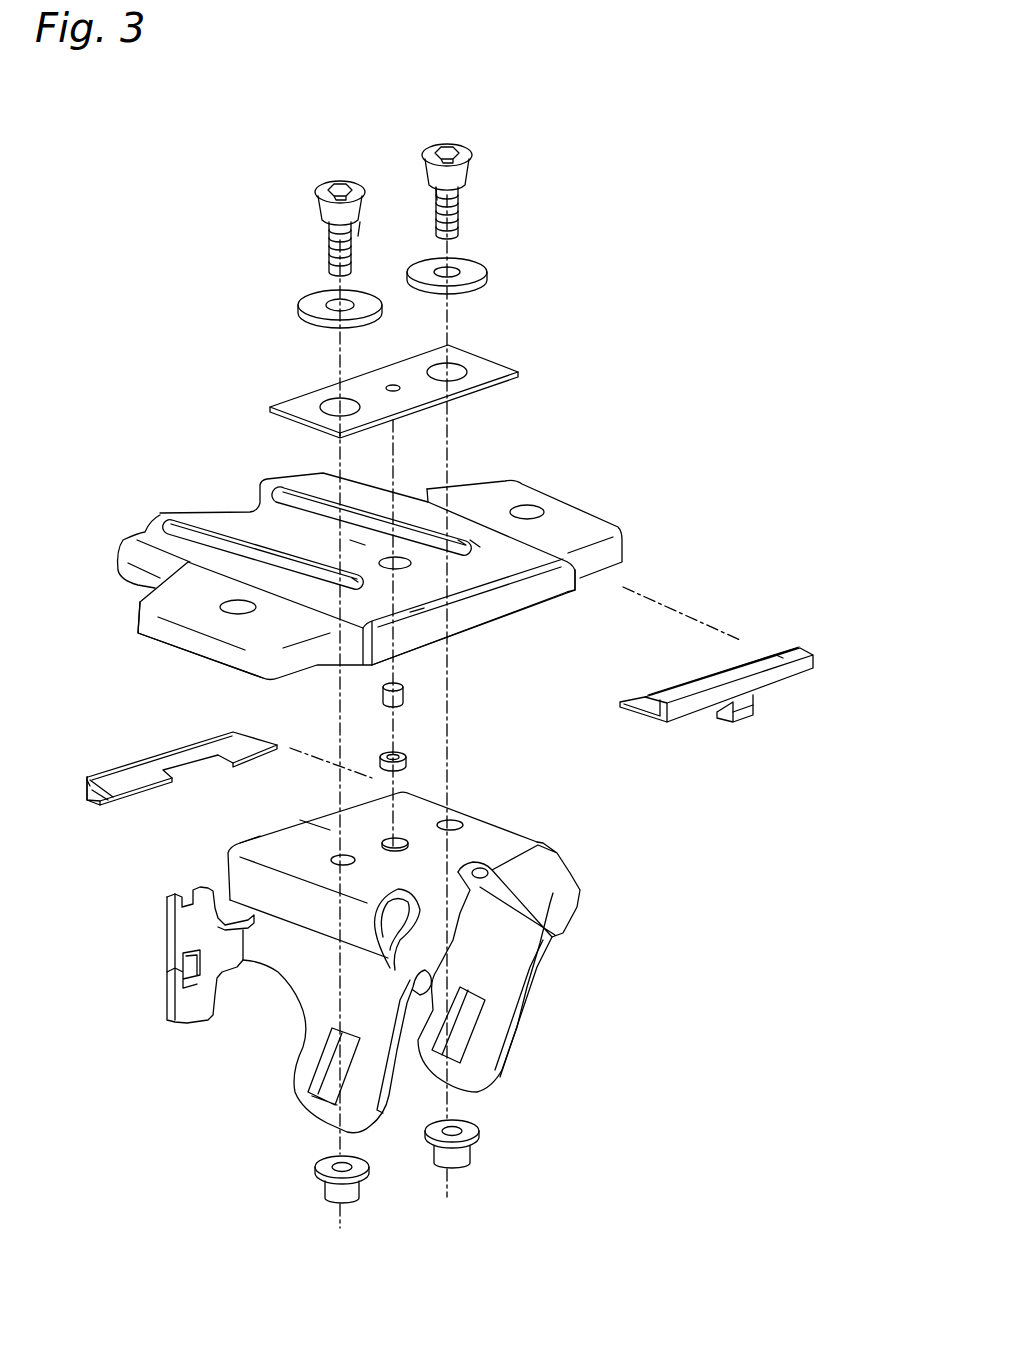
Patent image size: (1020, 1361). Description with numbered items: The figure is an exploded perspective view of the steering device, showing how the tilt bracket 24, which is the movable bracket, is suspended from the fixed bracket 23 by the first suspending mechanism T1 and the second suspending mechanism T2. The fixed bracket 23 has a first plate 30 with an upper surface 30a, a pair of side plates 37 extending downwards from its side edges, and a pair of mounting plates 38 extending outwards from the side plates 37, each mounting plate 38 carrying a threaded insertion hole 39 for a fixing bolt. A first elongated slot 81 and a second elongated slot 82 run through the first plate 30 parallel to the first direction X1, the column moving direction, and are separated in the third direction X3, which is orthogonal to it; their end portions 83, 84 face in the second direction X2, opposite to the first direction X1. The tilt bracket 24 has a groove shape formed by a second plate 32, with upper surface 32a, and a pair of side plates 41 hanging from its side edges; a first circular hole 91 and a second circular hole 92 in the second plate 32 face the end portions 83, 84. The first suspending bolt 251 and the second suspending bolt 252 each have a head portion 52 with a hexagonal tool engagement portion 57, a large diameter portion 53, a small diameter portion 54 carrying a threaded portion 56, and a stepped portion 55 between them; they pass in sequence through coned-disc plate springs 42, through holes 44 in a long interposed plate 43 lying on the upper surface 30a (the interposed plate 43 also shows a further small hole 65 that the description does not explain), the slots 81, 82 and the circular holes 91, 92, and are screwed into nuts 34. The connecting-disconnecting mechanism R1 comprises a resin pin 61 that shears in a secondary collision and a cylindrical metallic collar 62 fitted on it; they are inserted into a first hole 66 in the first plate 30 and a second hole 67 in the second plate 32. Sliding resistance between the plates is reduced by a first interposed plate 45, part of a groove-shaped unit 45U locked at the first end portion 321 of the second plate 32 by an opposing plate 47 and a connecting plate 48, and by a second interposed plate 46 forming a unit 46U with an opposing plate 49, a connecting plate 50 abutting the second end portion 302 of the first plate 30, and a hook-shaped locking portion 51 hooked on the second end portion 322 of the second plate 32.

The first suspending mechanism T1 is at (320, 173).
The second suspending mechanism T2 is at (430, 133).
The first suspending bolt 251 is at (357, 177).
The second suspending bolt 252 is at (462, 142).
The head portion 52 is at (315, 182).
The large diameter portion 53 is at (325, 217).
The small diameter portion 54 is at (330, 230).
The stepped portion 55 is at (357, 227).
The threaded portion 56 is at (330, 257).
The tool engagement portion 57 is at (342, 180).
The plate spring 42 is at (313, 300).
The interposed plate 43 is at (493, 363).
The through hole 44 is at (333, 400).
The small hole 65 is at (393, 383).
The first plate 30 is at (272, 520).
The upper surface 30a is at (360, 550).
The side plate 37 is at (118, 575).
The mounting plate 38 is at (568, 530).
The threaded insertion hole 39 is at (527, 512).
The first elongated slot 81 is at (215, 538).
The second elongated slot 82 is at (303, 490).
The end portion 83 is at (320, 600).
The end portion 84 is at (462, 543).
The first hole 66 is at (397, 563).
The fixed bracket 23 is at (480, 547).
The second end portion 302 is at (418, 613).
The first direction X1 is at (538, 657).
The second direction X2 is at (523, 675).
The third direction X3 is at (465, 658).
The connecting-disconnecting mechanism R1 is at (500, 698).
The resin pin 61 is at (405, 695).
The cylindrical metallic collar 62 is at (408, 757).
The second interposed plate 46 is at (637, 702).
The unit 46U is at (780, 657).
The opposing plate 49 is at (688, 688).
The connecting plate 50 is at (777, 680).
The locking portion 51 is at (743, 713).
The first interposed plate 45 is at (148, 772).
The groove-shaped unit 45U is at (123, 774).
The opposing plate 47 is at (93, 805).
The connecting plate 48 is at (85, 790).
The tilt bracket 24 is at (520, 822).
The second plate 32 is at (475, 842).
The upper surface 32a is at (325, 838).
The first end portion 321 is at (262, 838).
The second end portion 322 is at (420, 890).
The first circular hole 91 is at (343, 858).
The second circular hole 92 is at (447, 825).
The second hole 67 is at (400, 840).
The side plate 41 is at (308, 967).
The nut 34 is at (362, 1190).